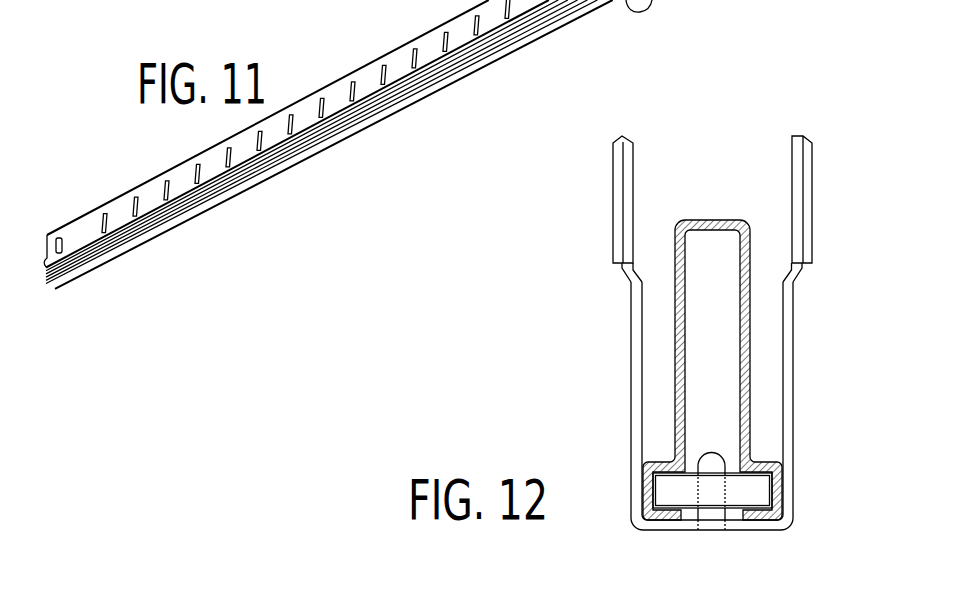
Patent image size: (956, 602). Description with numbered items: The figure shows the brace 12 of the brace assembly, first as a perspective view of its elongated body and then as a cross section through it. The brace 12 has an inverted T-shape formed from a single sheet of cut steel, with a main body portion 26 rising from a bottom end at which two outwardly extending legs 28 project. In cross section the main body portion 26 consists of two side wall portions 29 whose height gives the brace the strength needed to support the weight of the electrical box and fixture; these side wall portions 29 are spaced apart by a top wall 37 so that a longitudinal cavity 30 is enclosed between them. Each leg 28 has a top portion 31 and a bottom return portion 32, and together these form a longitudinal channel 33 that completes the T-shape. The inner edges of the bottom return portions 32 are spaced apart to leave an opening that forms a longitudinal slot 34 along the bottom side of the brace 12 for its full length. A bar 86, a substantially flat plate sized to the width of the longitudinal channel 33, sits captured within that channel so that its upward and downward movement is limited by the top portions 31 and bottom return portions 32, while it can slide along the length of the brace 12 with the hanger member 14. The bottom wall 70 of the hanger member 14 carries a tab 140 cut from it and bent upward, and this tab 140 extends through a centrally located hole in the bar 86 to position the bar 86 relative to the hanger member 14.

In FIG. 12, the brace 12 is at (674, 403).
In FIG. 12, the hanger member 14 is at (675, 333).
In FIG. 12, the main body portion 26 is at (672, 233).
In FIG. 11, the legs 28 is at (46, 284).
In FIG. 12, the legs 28 is at (708, 335).
In FIG. 12, the side wall portions 29 is at (675, 299).
In FIG. 12, the longitudinal cavity 30 is at (712, 335).
In FIG. 12, the top portion 31 is at (662, 460).
In FIG. 11, the bottom return portion 32 is at (640, 12).
In FIG. 12, the bottom return portion 32 is at (663, 520).
In FIG. 12, the longitudinal channel 33 is at (650, 492).
In FIG. 12, the longitudinal slot 34 is at (686, 516).
In FIG. 12, the top wall 37 is at (726, 219).
In FIG. 12, the bottom wall 70 is at (674, 530).
In FIG. 12, the bar 86 is at (743, 496).
In FIG. 12, the tab 140 is at (712, 453).